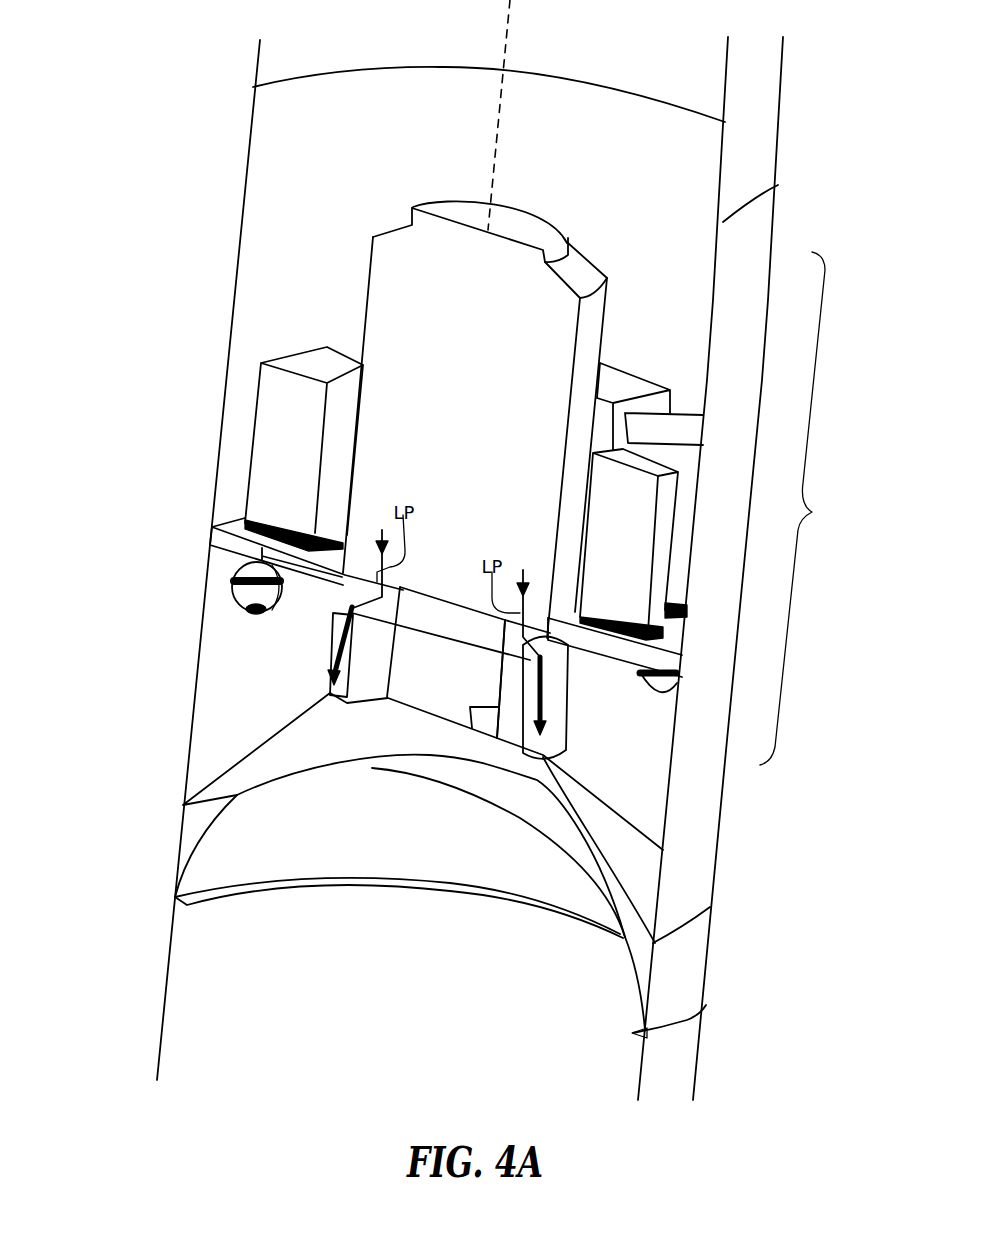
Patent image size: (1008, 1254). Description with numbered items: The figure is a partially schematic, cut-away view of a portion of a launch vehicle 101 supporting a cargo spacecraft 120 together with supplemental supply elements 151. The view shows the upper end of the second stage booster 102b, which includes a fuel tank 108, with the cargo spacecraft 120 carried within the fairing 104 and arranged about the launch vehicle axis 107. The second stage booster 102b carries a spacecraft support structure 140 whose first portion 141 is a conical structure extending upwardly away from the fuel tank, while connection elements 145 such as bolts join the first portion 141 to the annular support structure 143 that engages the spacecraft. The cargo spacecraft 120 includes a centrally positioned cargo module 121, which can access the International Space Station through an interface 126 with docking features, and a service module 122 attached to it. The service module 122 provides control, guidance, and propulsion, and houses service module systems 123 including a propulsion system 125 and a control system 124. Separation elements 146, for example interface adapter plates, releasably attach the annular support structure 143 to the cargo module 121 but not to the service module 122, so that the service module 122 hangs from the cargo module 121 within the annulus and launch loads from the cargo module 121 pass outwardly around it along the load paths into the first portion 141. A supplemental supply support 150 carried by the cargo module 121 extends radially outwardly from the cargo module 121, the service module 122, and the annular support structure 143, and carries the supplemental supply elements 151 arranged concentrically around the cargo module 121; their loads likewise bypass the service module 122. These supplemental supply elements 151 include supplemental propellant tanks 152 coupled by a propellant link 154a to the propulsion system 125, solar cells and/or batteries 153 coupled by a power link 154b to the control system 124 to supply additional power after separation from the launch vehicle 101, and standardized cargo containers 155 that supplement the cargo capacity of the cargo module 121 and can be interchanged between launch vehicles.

The launch vehicle 101 is at (113, 336).
The second stage booster 102b is at (695, 1088).
The fairing 104 is at (778, 223).
The launch vehicle axis 107 is at (508, 32).
The fuel tank 108 is at (615, 1047).
The cargo spacecraft 120 is at (809, 508).
The cargo module 121 is at (610, 300).
The service module 122 is at (368, 695).
The service module systems 123 is at (493, 758).
The control system 124 is at (470, 707).
The propulsion system 125 is at (413, 727).
The interface 126 is at (532, 222).
The spacecraft support structure 140 is at (233, 746).
The first portion 141 is at (286, 662).
The annular support structure 143 is at (316, 661).
The connection elements 145 is at (566, 740).
The separation elements 146 is at (335, 612).
The supplemental supply support 150 is at (210, 538).
The supplemental supply elements 151 is at (688, 407).
The supplemental propellant tanks 152 is at (238, 598).
The solar cells and/or batteries 153 is at (663, 515).
The propellant link 154a is at (400, 582).
The power link 154b is at (502, 635).
The cargo containers 155 is at (313, 360).